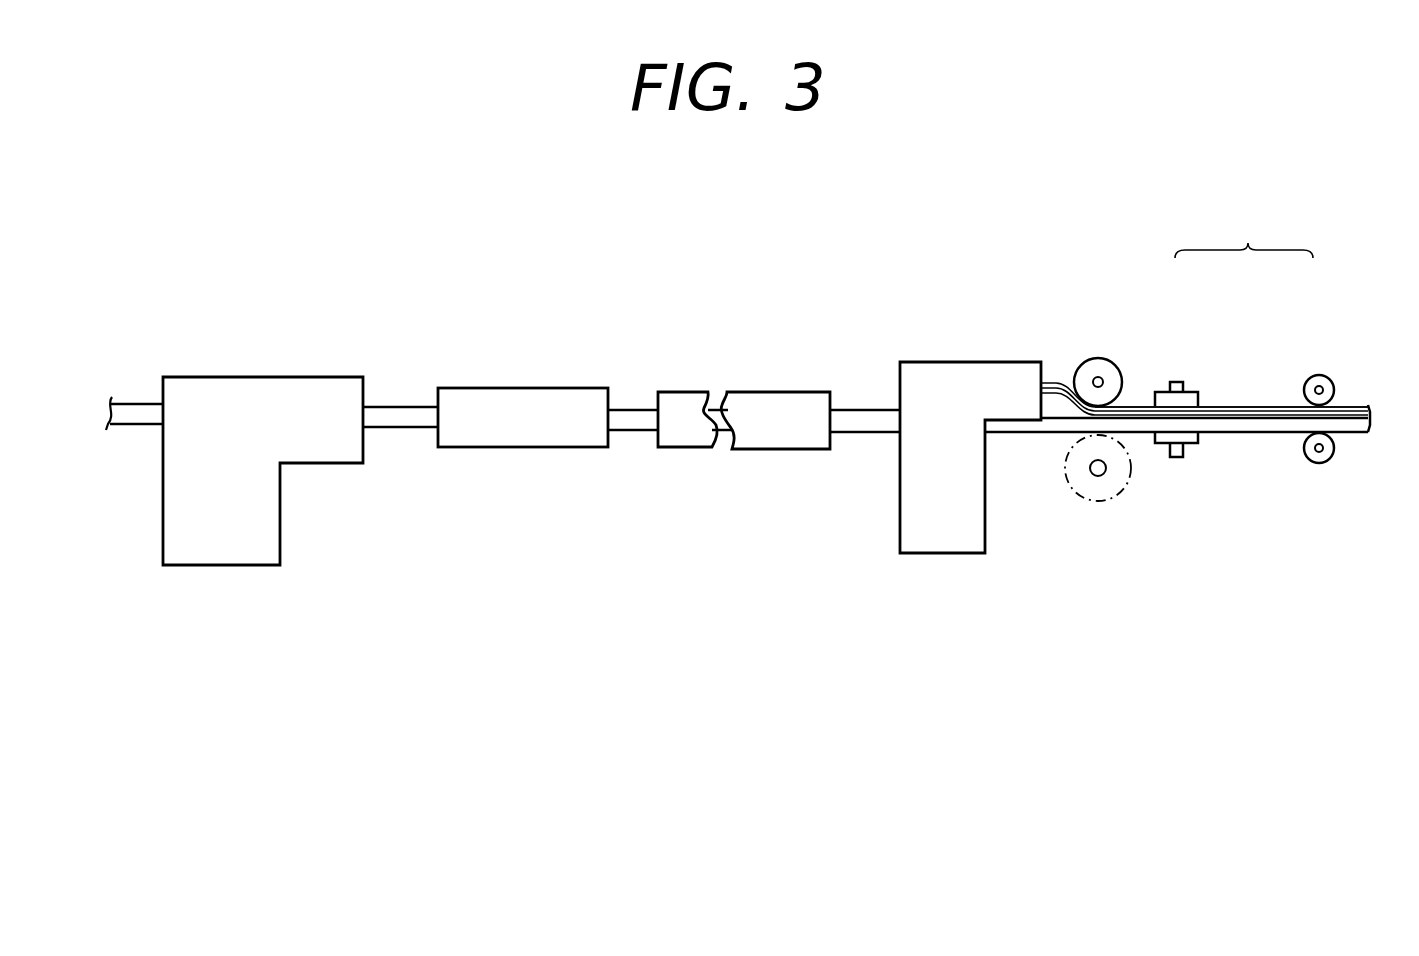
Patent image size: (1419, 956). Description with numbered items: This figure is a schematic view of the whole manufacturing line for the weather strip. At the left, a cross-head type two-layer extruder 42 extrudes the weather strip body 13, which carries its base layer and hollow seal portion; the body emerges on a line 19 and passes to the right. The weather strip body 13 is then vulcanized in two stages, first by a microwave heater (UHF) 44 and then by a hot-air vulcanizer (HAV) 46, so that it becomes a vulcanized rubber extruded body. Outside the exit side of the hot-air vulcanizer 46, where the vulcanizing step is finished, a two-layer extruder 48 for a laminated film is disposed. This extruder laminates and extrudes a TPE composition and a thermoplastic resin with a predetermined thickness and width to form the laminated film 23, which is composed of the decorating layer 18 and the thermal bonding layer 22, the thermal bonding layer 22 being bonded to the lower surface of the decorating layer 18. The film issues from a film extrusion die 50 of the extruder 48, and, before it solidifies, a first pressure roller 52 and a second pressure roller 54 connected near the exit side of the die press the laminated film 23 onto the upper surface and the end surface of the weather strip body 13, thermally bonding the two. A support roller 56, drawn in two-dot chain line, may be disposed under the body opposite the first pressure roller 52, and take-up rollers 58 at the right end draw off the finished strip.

The weather strip body 13 is at (632, 426).
The decorating layer 18 is at (1227, 405).
The drive shaft 19 is at (140, 406).
The thermal bonding layer 22 is at (1272, 410).
The laminated film 23 is at (1244, 237).
The cross-head type two-layer extruder 42 is at (293, 387).
The microwave heater (UHF) 44 is at (522, 397).
The hot-air vulcanizer (HAV) 46 is at (762, 394).
The two-layer extruder for laminated film 48 is at (977, 370).
The film extrusion die 50 is at (1013, 375).
The first pressure roller 52 is at (1100, 367).
The second pressure roller 54 is at (1190, 458).
The support roller 56 is at (1098, 502).
The take-up rollers 58 is at (1328, 376).